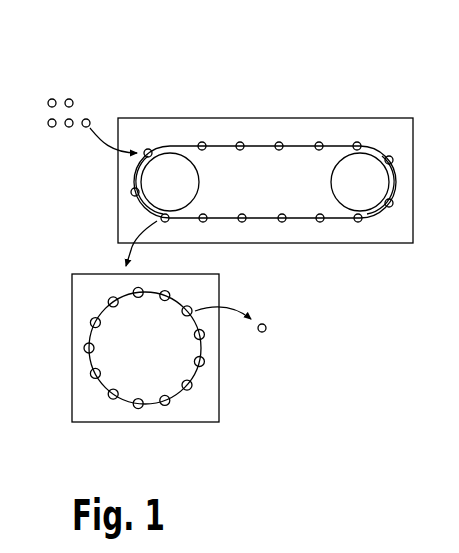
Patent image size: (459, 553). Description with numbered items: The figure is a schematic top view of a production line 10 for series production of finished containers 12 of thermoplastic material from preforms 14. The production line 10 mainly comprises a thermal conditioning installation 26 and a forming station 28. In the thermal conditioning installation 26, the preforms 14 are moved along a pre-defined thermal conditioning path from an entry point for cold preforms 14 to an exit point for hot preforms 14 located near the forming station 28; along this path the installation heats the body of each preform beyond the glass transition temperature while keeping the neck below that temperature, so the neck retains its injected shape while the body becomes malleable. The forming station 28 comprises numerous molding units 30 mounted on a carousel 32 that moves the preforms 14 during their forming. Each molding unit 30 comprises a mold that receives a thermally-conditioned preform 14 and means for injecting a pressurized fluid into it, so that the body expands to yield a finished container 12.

The production line 10 is at (194, 94).
The container 12 is at (263, 332).
The preform 14 is at (70, 99).
The thermal conditioning installation 26 is at (258, 116).
The forming station 28 is at (70, 350).
The molding unit 30 is at (187, 390).
The carousel 32 is at (178, 350).